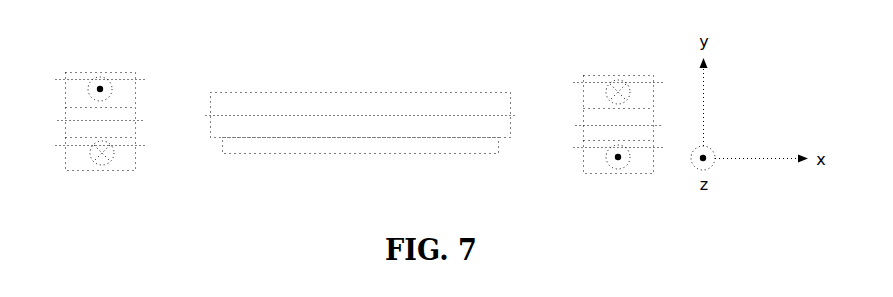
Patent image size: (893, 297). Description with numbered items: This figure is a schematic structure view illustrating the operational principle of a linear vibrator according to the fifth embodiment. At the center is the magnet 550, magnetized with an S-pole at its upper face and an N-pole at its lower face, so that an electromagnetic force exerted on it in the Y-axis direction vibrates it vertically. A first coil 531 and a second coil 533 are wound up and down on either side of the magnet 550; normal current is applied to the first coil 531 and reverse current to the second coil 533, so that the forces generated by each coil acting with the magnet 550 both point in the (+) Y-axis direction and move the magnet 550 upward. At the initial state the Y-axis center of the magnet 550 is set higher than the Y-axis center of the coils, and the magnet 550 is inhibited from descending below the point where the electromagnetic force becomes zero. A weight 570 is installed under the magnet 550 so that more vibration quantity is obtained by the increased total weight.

The first coil 531 is at (117, 85).
The second coil 533 is at (636, 87).
The magnet 550 is at (312, 102).
The weight 570 is at (398, 145).